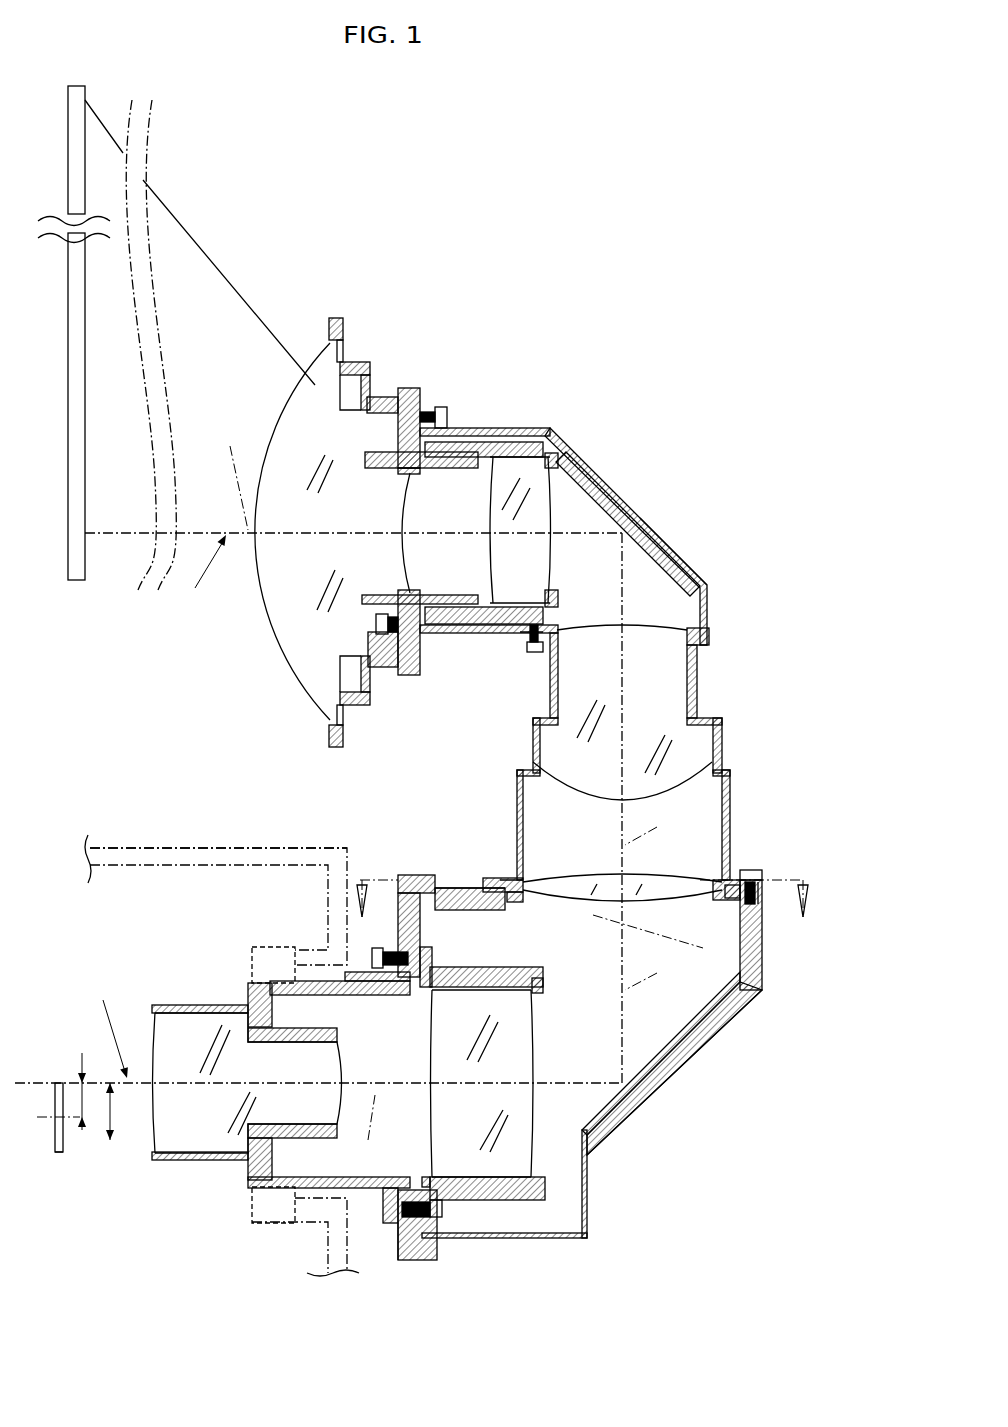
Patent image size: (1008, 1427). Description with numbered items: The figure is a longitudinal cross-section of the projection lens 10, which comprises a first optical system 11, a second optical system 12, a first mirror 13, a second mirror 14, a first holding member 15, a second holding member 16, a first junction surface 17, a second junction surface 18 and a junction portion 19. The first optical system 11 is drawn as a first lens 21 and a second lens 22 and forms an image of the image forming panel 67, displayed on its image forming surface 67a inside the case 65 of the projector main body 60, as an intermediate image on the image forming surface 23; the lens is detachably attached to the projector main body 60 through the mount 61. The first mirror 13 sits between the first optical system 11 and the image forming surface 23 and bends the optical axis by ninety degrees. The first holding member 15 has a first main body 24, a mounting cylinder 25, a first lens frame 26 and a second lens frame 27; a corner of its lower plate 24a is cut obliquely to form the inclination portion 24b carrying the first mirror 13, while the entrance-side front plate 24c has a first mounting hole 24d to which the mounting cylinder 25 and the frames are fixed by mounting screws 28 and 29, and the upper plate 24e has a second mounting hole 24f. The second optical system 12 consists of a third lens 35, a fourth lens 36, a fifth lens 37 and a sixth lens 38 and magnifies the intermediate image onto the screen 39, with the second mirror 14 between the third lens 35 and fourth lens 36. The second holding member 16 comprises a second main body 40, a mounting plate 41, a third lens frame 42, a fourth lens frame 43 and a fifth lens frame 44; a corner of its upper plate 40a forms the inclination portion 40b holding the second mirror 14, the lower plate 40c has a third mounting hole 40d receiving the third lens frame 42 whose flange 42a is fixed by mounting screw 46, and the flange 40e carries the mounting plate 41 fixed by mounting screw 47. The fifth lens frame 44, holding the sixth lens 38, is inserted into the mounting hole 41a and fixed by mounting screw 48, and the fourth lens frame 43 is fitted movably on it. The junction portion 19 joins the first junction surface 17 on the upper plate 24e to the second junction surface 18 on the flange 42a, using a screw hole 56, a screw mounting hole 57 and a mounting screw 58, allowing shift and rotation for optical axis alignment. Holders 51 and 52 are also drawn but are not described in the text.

The projection lens 10 is at (546, 234).
The first optical system 11 is at (605, 1155).
The second optical system 12 is at (572, 430).
The first mirror 13 is at (697, 1020).
The second mirror 14 is at (633, 507).
The first holding member 15 is at (403, 875).
The second holding member 16 is at (677, 547).
The first junction surface 17 is at (762, 882).
The second junction surface 18 is at (763, 897).
The junction portion 19 is at (770, 860).
The first lens 21 is at (187, 1133).
The second lens 22 is at (503, 1162).
The image forming surface 23 is at (599, 920).
The first main body 24 is at (750, 987).
The lower plate 24a is at (567, 1240).
The inclination portion 24b is at (657, 1087).
The entrance-side front plate 24c is at (398, 1248).
The first mounting hole 24d is at (383, 1215).
The upper plate 24e is at (443, 888).
The second mounting hole 24f is at (510, 908).
The mounting cylinder 25 is at (248, 1180).
The first lens frame 26 is at (203, 1160).
The second lens frame 27 is at (467, 1202).
The mounting screw 28 is at (389, 993).
The mounting screw 29 is at (440, 1223).
The third lens 35 is at (566, 882).
The fourth lens 36 is at (673, 698).
The fifth lens 37 is at (527, 560).
The sixth lens 38 is at (318, 382).
The screen 39 is at (85, 97).
The second main body 40 is at (564, 536).
The upper plate 40a is at (508, 428).
The inclination portion 40b is at (597, 478).
The lower plate 40c is at (462, 633).
The third mounting hole 40d is at (550, 621).
The flange 40e is at (421, 398).
The mounting plate 41 is at (413, 463).
The mounting hole 41a is at (403, 474).
The third lens frame 42 is at (722, 773).
The flange 42a is at (525, 640).
The fourth lens frame 43 is at (485, 445).
The fifth lens frame 44 is at (337, 318).
The mounting screw 46 is at (531, 653).
The mounting screw 47 is at (444, 406).
The mounting screw 48 is at (377, 623).
The connecting portion 51 is at (467, 888).
The lens holding ring 52 is at (475, 916).
The screw hole 56 is at (743, 888).
The screw mounting hole 57 is at (742, 870).
The mounting screw 58 is at (750, 870).
The projector main body 60 is at (211, 839).
The mount 61 is at (252, 965).
The case 65 is at (285, 847).
The image forming panel 67 is at (62, 1080).
The image forming surface 67a is at (63, 1153).